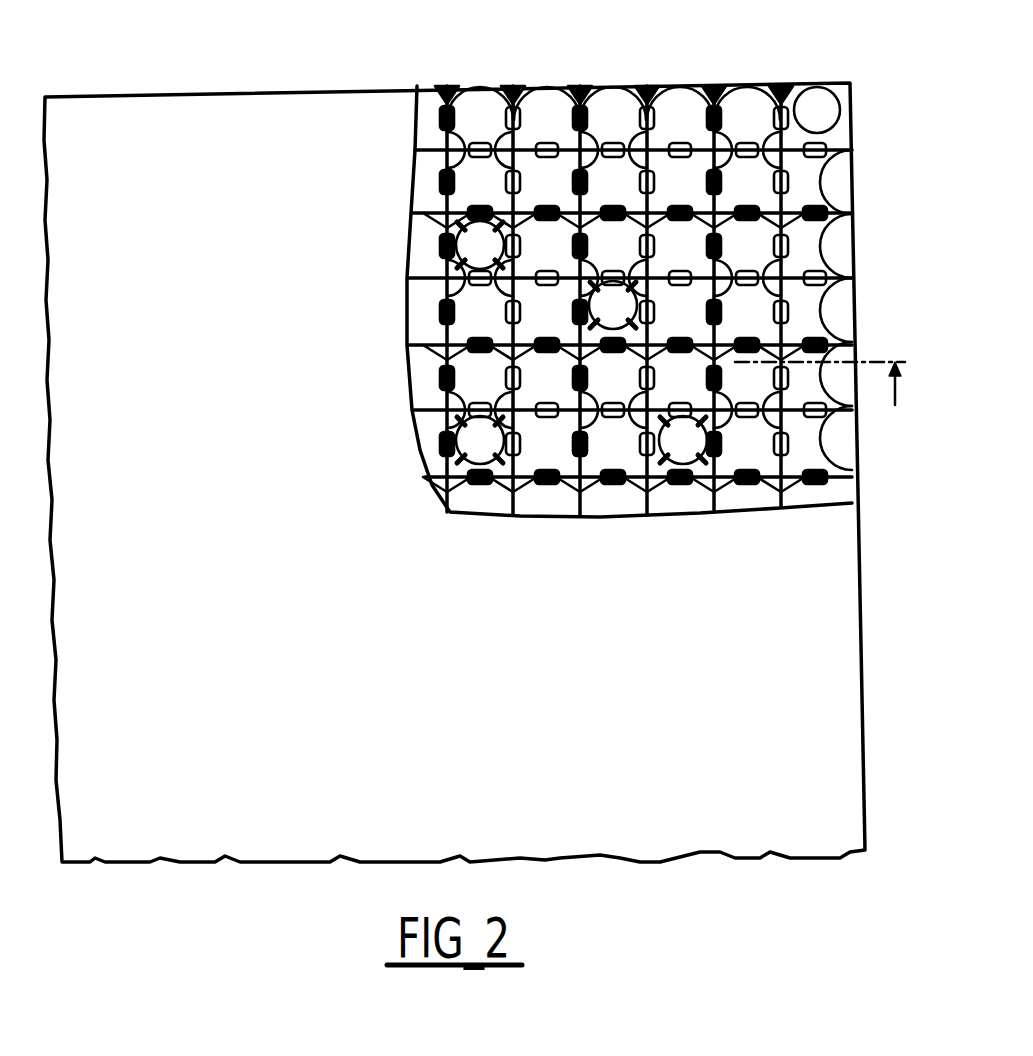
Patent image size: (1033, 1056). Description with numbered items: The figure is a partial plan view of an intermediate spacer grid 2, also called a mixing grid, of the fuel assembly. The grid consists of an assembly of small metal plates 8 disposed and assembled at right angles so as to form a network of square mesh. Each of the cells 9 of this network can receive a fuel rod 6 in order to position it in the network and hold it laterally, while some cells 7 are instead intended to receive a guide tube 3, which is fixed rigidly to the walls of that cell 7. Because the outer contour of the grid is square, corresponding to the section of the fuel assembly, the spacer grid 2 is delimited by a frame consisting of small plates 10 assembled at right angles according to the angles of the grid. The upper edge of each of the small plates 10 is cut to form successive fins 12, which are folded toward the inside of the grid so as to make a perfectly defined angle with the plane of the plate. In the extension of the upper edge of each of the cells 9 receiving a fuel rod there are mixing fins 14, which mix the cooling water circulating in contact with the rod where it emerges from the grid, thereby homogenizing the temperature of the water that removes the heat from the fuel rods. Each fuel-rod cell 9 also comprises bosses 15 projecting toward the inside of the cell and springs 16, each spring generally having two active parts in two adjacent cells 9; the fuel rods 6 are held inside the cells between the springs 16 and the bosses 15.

The intermediate spacer grid 2 is at (208, 97).
The guide tube 3 is at (820, 364).
The fuel rod 6 is at (817, 87).
The cell 7 is at (613, 305).
The small metal plate 8 is at (737, 138).
The cell 9 is at (672, 148).
The small plate 10 is at (828, 266).
The fin 12 is at (866, 466).
The mixing fin 14 is at (830, 222).
The boss 15 is at (595, 125).
The spring 16 is at (834, 312).